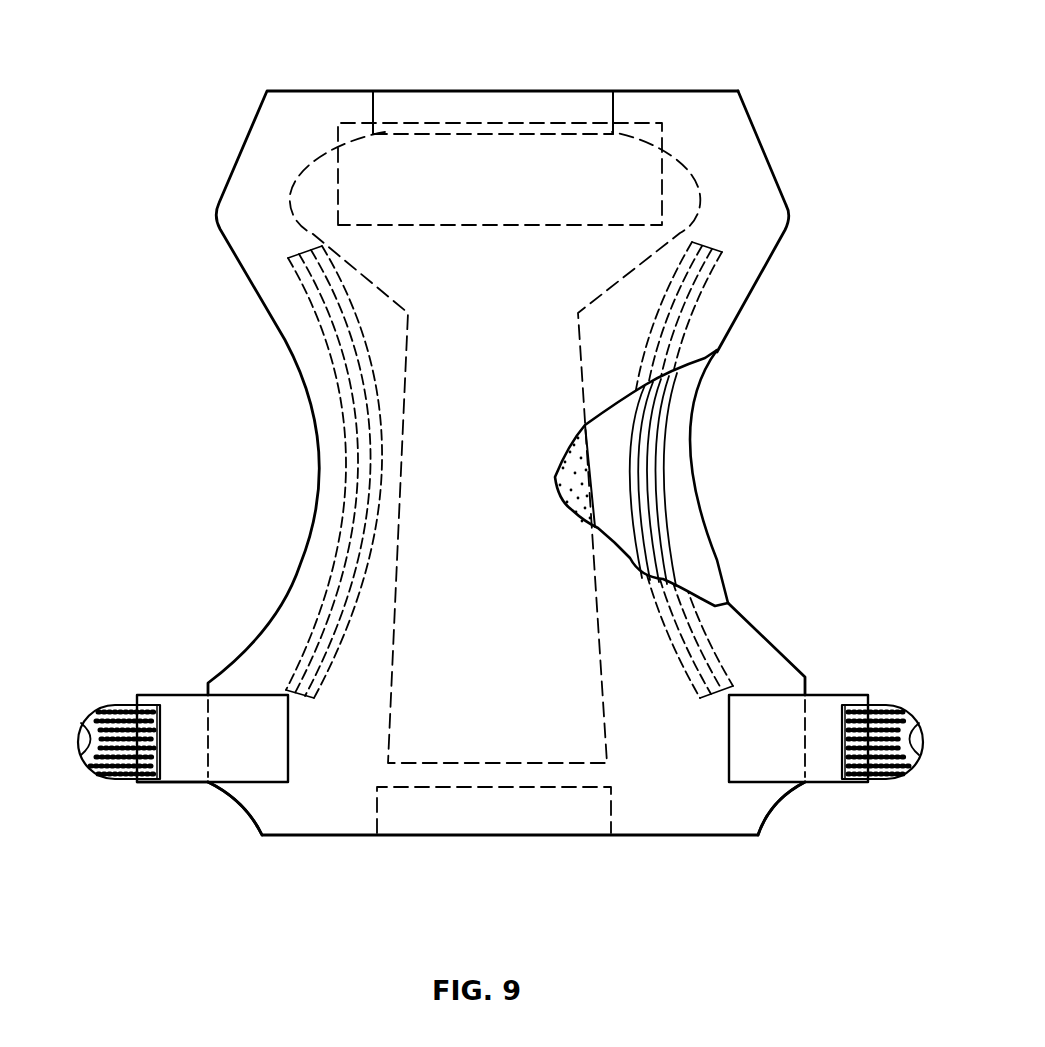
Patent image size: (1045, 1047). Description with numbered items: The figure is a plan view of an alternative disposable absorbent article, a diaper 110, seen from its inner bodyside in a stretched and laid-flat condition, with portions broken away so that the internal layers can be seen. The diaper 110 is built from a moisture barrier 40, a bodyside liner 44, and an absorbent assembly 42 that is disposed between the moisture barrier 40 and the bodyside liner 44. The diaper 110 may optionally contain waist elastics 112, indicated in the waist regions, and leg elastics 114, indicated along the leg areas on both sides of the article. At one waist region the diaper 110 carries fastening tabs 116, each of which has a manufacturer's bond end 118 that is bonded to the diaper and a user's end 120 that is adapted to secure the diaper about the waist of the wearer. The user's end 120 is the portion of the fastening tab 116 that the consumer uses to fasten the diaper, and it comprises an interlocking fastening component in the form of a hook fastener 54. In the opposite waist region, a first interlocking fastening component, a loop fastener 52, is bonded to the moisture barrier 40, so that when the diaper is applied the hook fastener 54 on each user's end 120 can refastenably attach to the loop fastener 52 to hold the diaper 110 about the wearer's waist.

The diaper 110 is at (372, 55).
The waist elastics 112 is at (494, 96).
The loop fastener 52 is at (648, 138).
The bodyside liner 44 is at (725, 303).
The moisture barrier 40 is at (687, 397).
The absorbent assembly 42 is at (590, 463).
The leg elastics 114 is at (347, 455).
The fastening tabs 116 is at (171, 652).
The hook fastener 54 is at (107, 704).
The user's end 120 is at (143, 796).
The manufacturer's bond end 118 is at (247, 818).